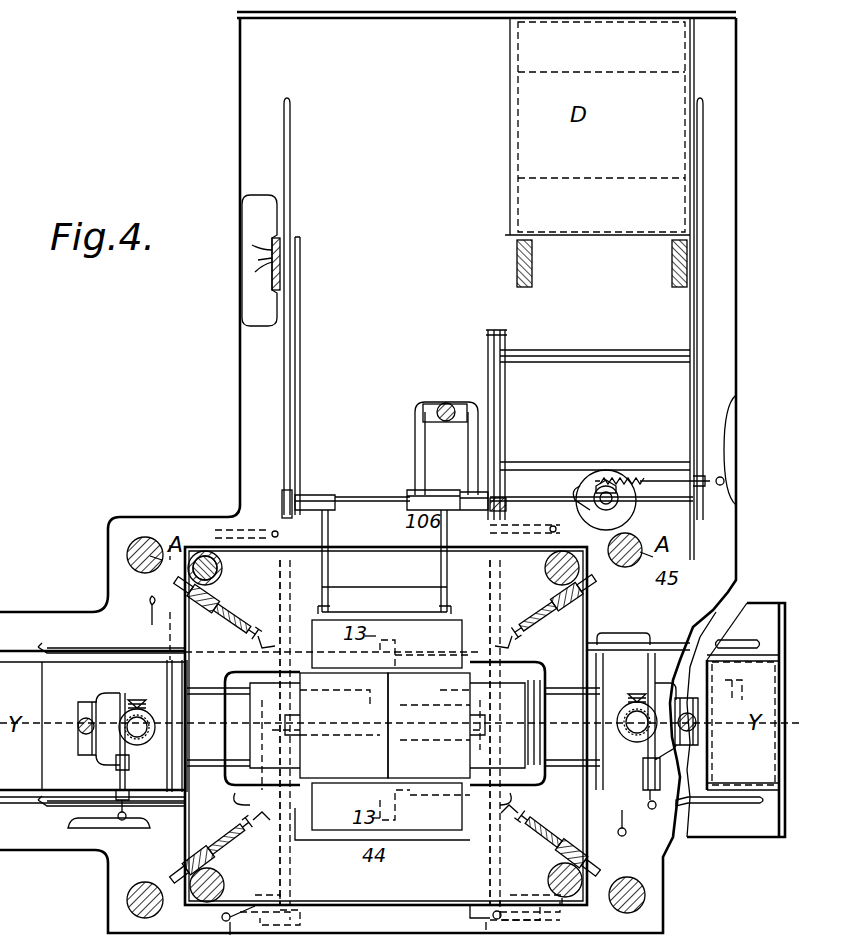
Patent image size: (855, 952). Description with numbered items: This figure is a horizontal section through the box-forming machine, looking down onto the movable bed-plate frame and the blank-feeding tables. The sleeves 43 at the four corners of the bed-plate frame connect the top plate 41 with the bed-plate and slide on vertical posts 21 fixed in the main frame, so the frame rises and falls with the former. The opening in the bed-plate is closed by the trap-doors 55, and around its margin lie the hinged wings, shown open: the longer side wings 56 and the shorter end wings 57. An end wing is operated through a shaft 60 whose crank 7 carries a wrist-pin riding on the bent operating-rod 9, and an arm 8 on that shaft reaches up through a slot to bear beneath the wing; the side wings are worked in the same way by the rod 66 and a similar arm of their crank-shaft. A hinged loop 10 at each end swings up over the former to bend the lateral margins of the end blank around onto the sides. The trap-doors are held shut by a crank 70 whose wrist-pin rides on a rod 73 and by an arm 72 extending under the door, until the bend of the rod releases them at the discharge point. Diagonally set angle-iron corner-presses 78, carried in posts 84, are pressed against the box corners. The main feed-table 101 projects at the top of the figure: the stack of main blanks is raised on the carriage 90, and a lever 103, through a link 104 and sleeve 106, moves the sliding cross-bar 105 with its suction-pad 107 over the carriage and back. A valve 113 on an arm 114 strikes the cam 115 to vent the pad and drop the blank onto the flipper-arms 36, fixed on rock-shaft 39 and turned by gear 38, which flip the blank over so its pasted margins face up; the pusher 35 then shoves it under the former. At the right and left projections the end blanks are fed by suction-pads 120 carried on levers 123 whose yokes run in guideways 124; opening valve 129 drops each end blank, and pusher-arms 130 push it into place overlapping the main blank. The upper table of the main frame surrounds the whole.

The crank 7 is at (222, 918).
The arm 8 is at (262, 767).
The bent operating-rod 9 is at (237, 937).
The loop 10 is at (238, 800).
The post 21 is at (225, 886).
The pusher 35 is at (415, 574).
The flipper-arms 36 is at (556, 358).
The gear 38 is at (508, 502).
The rock-shaft 39 is at (505, 432).
The top plate 41 is at (222, 578).
The sleeve 43 is at (548, 882).
The trap-doors 55 is at (385, 725).
The side wings 56 is at (382, 730).
The end wings 57 is at (387, 817).
The shaft 60 is at (284, 858).
The rod 66 is at (152, 625).
The crank 70 is at (480, 852).
The arm 72 is at (450, 730).
The rod 73 is at (493, 924).
The corner-press 78 is at (510, 648).
The post 84 is at (552, 594).
The carriage 90 is at (599, 289).
The main feed-table 101 is at (345, 170).
The lever 103 is at (445, 404).
The link 104 is at (420, 448).
The sliding cross-bar 105 is at (352, 502).
The sleeve 106 is at (742, 336).
The suction-pad 107 is at (600, 490).
The valve 113 is at (583, 497).
The arm 114 is at (658, 478).
The cam 115 is at (737, 440).
The suction-pad 120 is at (144, 740).
The lever 123 is at (78, 722).
The guideways 124 is at (90, 652).
The valve 129 is at (138, 708).
The pusher-arms 130 is at (195, 760).